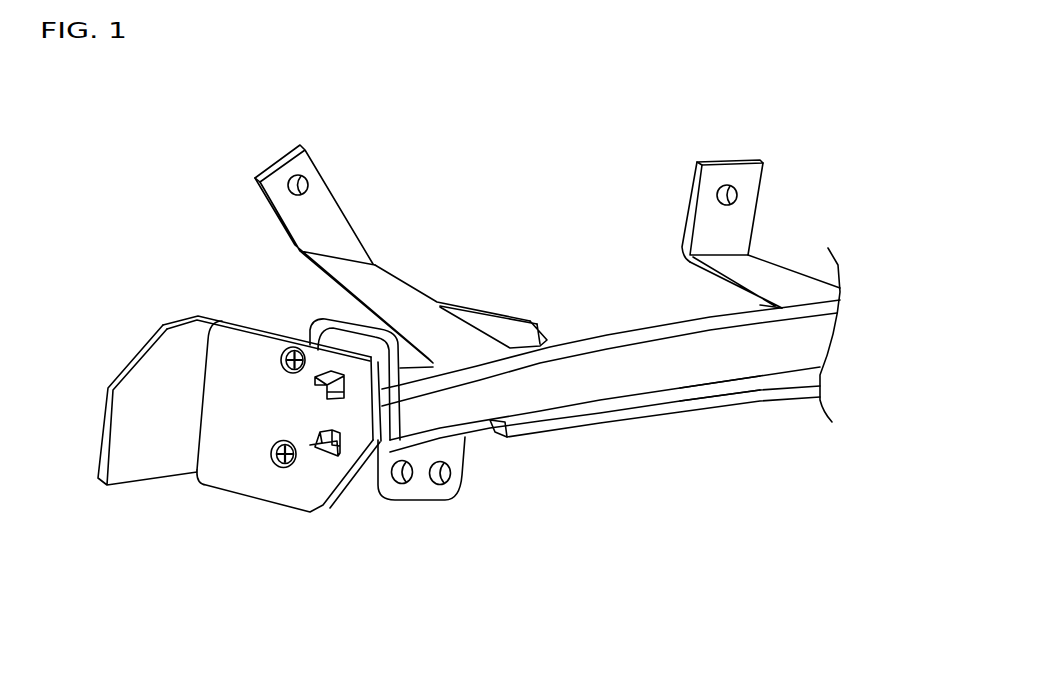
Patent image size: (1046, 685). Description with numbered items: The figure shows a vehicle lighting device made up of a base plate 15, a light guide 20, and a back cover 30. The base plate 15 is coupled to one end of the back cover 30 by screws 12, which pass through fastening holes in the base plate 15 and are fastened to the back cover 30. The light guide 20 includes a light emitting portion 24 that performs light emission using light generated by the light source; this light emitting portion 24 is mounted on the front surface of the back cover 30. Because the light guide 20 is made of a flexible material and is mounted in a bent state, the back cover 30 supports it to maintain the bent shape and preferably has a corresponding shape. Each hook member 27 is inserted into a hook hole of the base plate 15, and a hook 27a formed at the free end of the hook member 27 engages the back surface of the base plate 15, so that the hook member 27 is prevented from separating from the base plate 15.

The screw 12 is at (277, 357).
The base plate 15 is at (233, 467).
The light guide 20 is at (533, 392).
The light emitting portion 24 is at (617, 373).
The hook member 27 is at (401, 292).
The hook 27a is at (323, 375).
The back cover 30 is at (607, 336).